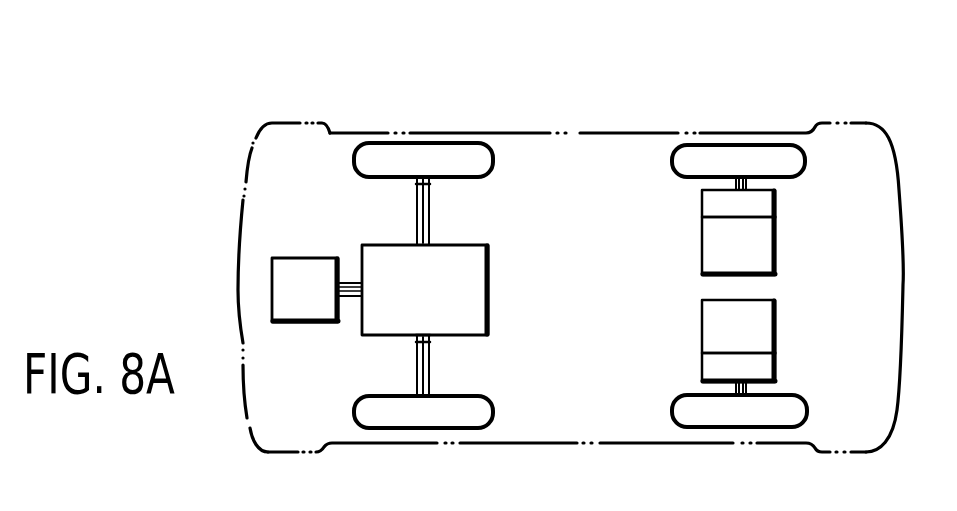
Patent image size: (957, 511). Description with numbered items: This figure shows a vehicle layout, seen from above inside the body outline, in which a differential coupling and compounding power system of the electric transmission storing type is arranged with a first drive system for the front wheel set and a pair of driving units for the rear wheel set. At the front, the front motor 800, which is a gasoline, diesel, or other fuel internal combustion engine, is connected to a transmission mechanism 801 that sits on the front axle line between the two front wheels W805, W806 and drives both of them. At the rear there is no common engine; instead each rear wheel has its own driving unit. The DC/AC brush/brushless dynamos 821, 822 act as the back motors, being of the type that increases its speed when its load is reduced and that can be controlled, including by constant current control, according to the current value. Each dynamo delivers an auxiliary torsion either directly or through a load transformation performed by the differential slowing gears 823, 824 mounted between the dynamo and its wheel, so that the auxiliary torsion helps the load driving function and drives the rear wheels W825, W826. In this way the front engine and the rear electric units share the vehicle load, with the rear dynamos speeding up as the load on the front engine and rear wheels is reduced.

The front wheel W805 is at (442, 157).
The front wheel W806 is at (455, 407).
The rear wheel W825 is at (683, 160).
The rear wheel W826 is at (683, 403).
The front motor 800 is at (317, 290).
The transmission mechanism 801 is at (456, 255).
The DC/AC brush/brushless dynamo 821 is at (718, 240).
The DC/AC brush/brushless dynamo 822 is at (717, 313).
The differential slowing gears 823 is at (713, 202).
The differential slowing gears 824 is at (712, 366).